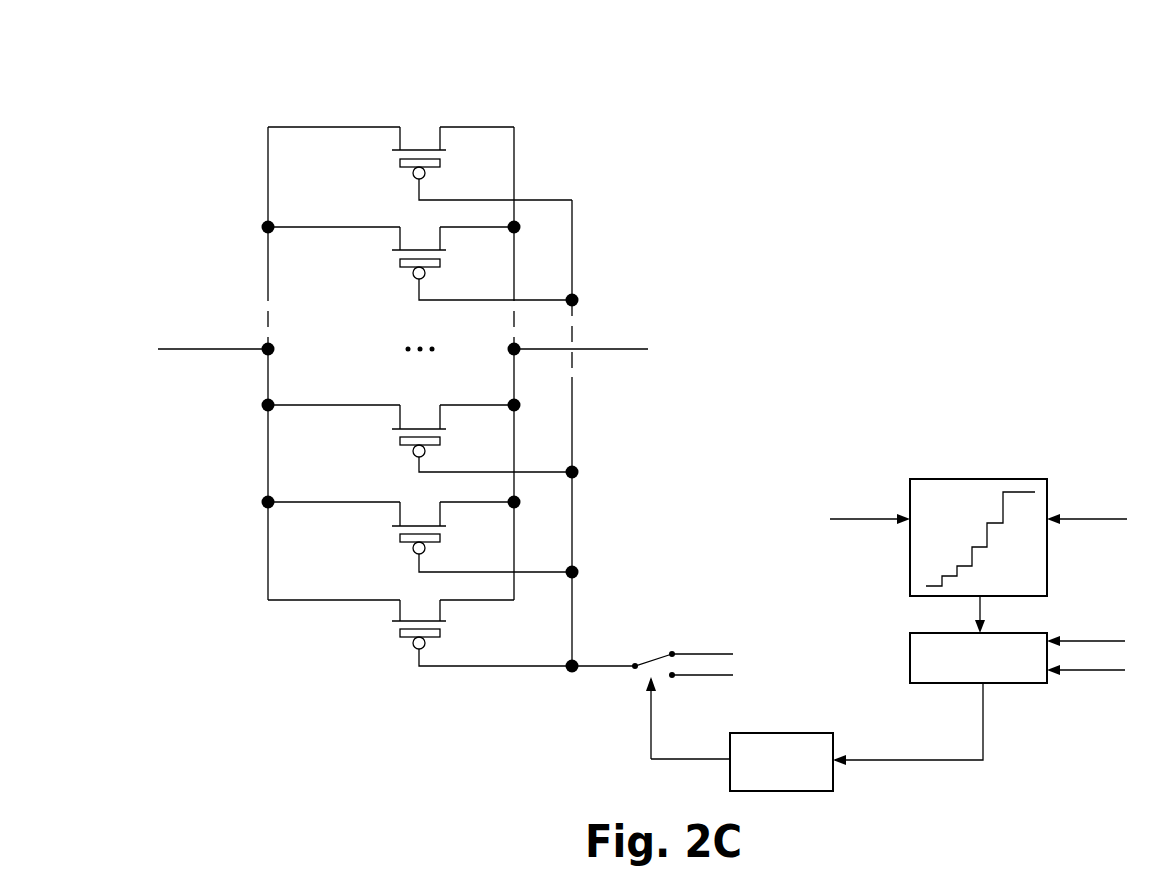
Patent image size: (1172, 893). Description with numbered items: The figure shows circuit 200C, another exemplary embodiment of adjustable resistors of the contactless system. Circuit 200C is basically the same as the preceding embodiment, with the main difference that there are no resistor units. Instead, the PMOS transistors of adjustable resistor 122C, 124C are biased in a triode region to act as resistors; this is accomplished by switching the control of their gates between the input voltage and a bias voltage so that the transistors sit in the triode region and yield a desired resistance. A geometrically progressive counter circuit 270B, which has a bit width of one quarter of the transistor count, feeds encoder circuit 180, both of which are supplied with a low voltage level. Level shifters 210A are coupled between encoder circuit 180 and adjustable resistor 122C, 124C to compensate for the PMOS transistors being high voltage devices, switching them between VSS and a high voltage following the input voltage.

The adjustable resistor 122C is at (425, 363).
The adjustable resistor 124C is at (403, 400).
The circuit 200C is at (650, 422).
The geometrically progressive counter circuit 270B is at (1047, 479).
The level shifters 210A is at (788, 733).
The encoder circuit 180 is at (1017, 683).